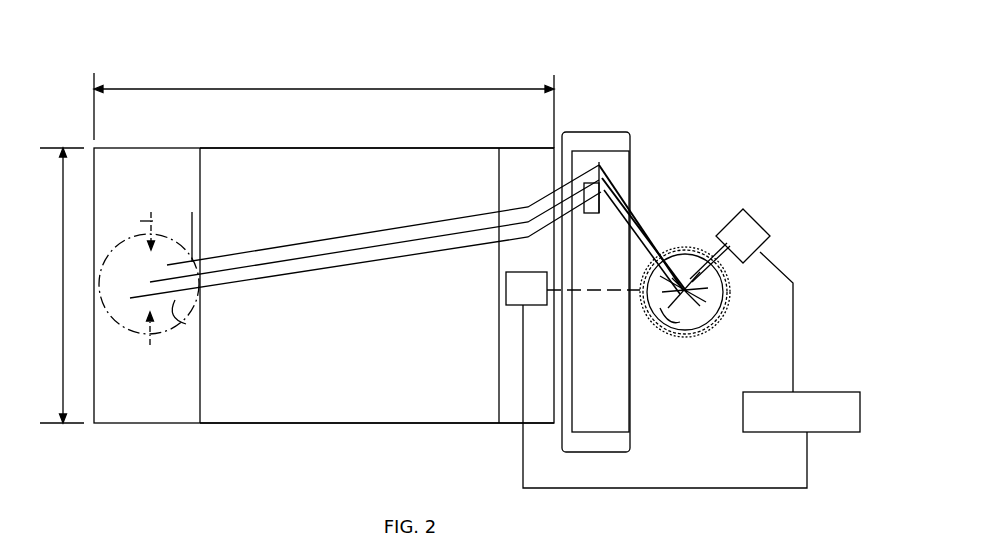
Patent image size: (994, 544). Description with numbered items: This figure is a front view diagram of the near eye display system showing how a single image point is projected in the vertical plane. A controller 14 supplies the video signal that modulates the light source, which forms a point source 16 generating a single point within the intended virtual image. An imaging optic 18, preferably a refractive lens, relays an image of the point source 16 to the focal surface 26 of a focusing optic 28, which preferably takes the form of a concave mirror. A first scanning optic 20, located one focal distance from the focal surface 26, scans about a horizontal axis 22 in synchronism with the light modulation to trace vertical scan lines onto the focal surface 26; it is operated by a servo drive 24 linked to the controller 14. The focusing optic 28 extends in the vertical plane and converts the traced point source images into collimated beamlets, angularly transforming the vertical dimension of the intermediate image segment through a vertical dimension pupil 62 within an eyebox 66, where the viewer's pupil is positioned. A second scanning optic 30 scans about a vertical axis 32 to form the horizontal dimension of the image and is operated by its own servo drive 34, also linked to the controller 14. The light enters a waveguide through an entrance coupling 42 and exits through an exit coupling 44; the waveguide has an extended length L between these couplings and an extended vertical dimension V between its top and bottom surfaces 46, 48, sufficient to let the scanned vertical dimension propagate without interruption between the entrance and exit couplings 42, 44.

The controller 14 is at (801, 412).
The point source 16 is at (716, 328).
The imaging optic 18 is at (678, 342).
The first scanning optic 20 is at (693, 252).
The horizontal axis 22 is at (645, 328).
The servo drive 24 is at (737, 228).
The focal surface 26 is at (642, 225).
The focusing optic 28 is at (597, 135).
The second scanning optic 30 is at (600, 291).
The vertical axis 32 is at (600, 288).
The servo drive 34 is at (530, 292).
The entrance coupling 42 is at (517, 175).
The exit coupling 44 is at (150, 403).
The top surface 46 is at (295, 147).
The bottom surface 48 is at (360, 425).
The vertical dimension pupil 62 is at (145, 215).
The eyebox 66 is at (187, 316).